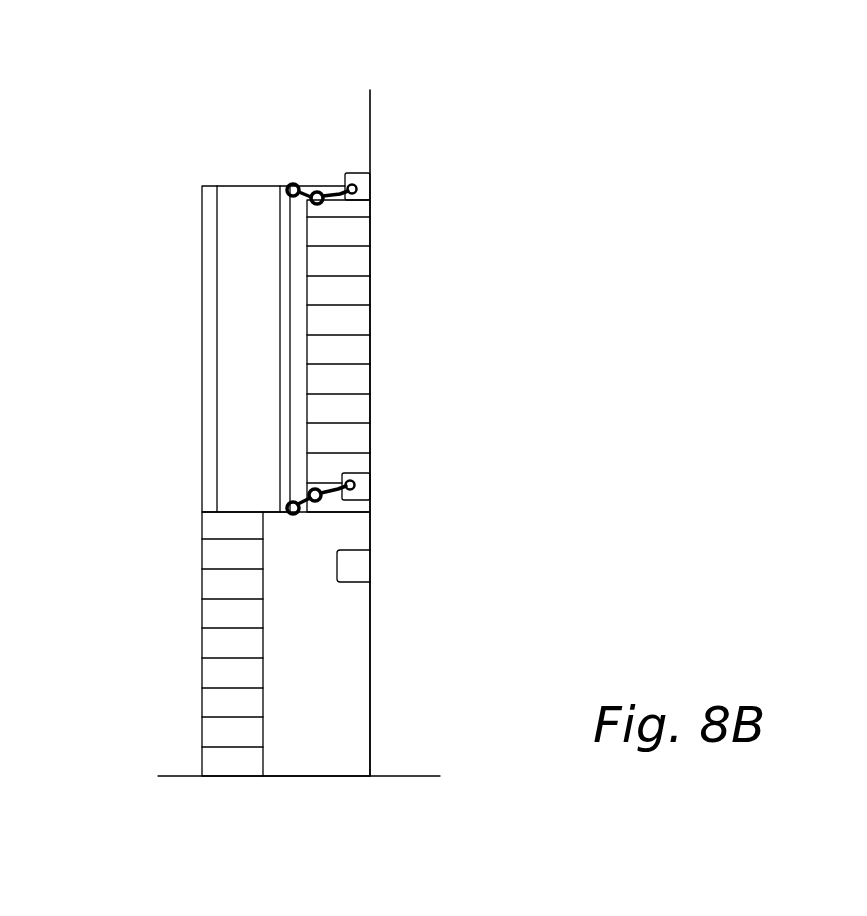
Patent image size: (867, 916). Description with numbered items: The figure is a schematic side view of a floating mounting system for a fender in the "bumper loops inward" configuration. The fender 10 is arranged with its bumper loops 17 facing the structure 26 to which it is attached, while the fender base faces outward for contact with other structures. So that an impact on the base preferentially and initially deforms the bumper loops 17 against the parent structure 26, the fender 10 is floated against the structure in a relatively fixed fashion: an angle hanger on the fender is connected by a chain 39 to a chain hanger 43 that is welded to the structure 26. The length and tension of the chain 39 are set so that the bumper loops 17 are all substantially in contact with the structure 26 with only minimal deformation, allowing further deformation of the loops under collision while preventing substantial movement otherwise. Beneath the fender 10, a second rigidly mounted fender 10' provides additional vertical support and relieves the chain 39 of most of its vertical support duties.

The fender 10 is at (178, 290).
The second rigidly mounted fender 10' is at (247, 644).
The bumper loops 17 is at (343, 102).
The structure 26 is at (420, 366).
The chain 39 is at (291, 183).
The chain hanger 43 is at (371, 190).